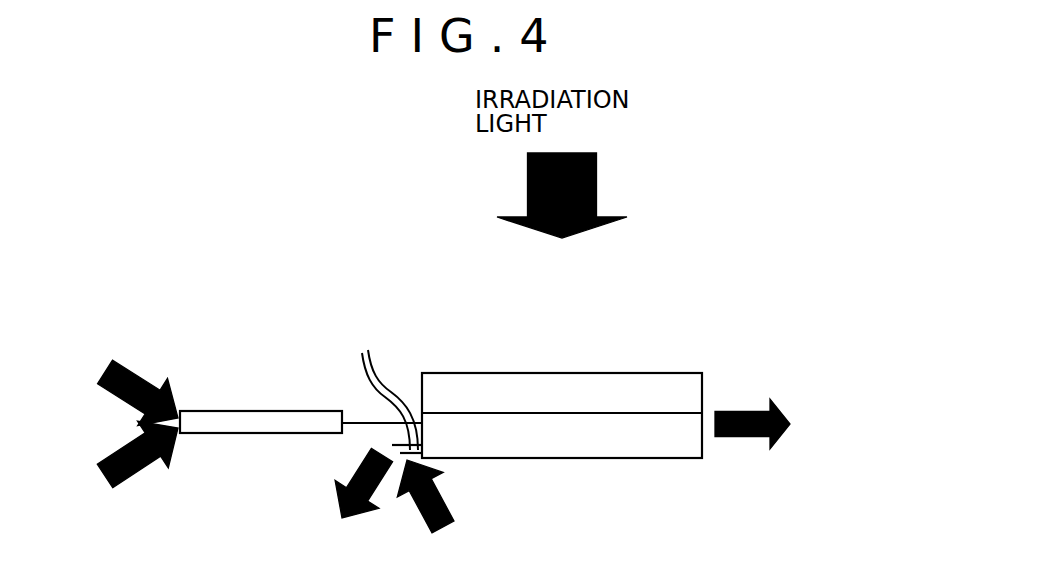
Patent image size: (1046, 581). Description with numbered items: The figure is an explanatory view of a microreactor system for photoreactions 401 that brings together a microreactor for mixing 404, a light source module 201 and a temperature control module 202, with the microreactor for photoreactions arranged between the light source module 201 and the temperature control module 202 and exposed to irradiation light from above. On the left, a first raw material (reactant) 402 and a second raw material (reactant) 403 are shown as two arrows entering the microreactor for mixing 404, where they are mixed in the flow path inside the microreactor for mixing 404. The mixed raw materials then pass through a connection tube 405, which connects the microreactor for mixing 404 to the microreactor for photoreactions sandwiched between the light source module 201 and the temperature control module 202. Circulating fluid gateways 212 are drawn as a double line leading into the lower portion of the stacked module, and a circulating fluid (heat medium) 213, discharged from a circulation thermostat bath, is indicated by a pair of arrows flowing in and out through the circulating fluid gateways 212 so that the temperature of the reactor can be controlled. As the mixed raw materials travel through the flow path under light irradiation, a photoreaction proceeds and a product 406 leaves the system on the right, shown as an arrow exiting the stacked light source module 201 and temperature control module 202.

The microreactor system for photoreactions 401 is at (685, 313).
The light source module 201 is at (587, 390).
The temperature control module 202 is at (545, 438).
The microreactor for mixing 404 is at (213, 422).
The connection tube 405 is at (352, 425).
The circulating fluid gateways 212 is at (383, 387).
The circulating fluid (heat medium) 213 is at (391, 504).
The first raw material (reactant) 402 is at (121, 389).
The second raw material (reactant) 403 is at (121, 460).
The product 406 is at (777, 424).